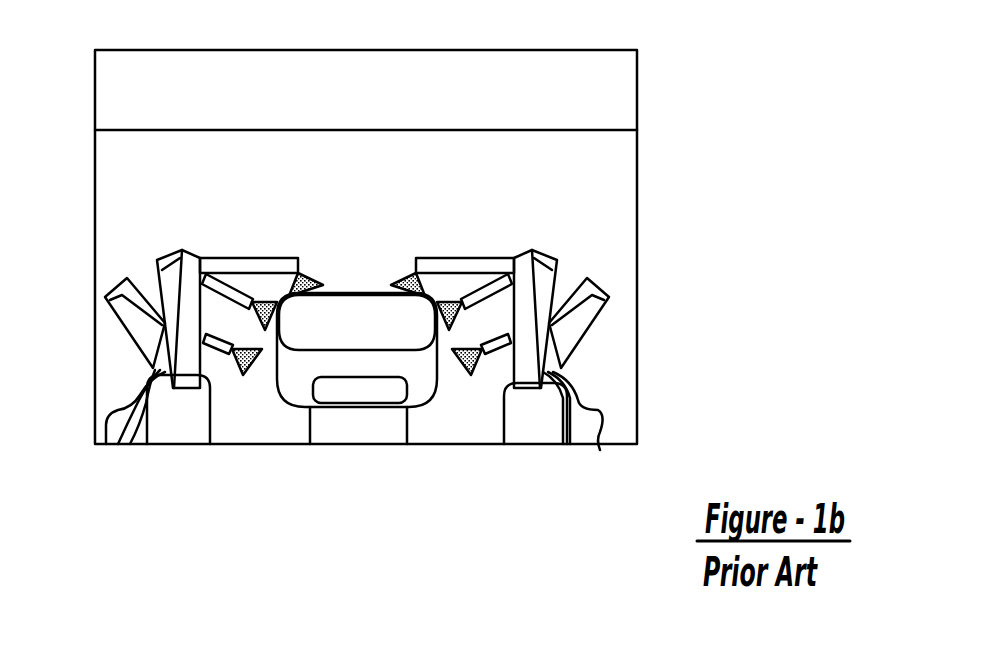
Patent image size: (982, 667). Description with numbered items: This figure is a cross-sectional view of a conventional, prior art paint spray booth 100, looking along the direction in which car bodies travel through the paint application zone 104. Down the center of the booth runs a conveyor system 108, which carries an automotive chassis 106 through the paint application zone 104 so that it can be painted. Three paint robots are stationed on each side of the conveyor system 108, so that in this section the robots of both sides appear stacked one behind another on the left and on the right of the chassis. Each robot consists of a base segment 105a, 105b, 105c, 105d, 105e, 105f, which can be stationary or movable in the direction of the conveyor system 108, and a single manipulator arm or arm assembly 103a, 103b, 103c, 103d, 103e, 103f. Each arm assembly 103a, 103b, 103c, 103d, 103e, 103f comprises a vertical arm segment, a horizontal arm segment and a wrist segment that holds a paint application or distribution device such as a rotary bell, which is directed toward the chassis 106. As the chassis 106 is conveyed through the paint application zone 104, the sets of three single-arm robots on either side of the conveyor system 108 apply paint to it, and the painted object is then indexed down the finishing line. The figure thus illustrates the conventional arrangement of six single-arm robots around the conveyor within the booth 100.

The paint spray booth 100 is at (213, 50).
The paint application zone 104 is at (375, 178).
The automotive chassis 106 is at (378, 293).
The conveyor system 108 is at (342, 430).
The arm assembly 103a is at (249, 258).
The arm assembly 103b is at (472, 257).
The arm assembly 103c is at (232, 290).
The arm assembly 103d is at (500, 302).
The arm assembly 103e is at (230, 355).
The arm assembly 103f is at (497, 350).
The base segment 105a is at (106, 444).
The base segment 105b is at (568, 425).
The base segment 105c is at (118, 444).
The base segment 105d is at (600, 450).
The base segment 105e is at (130, 444).
The base segment 105f is at (566, 410).